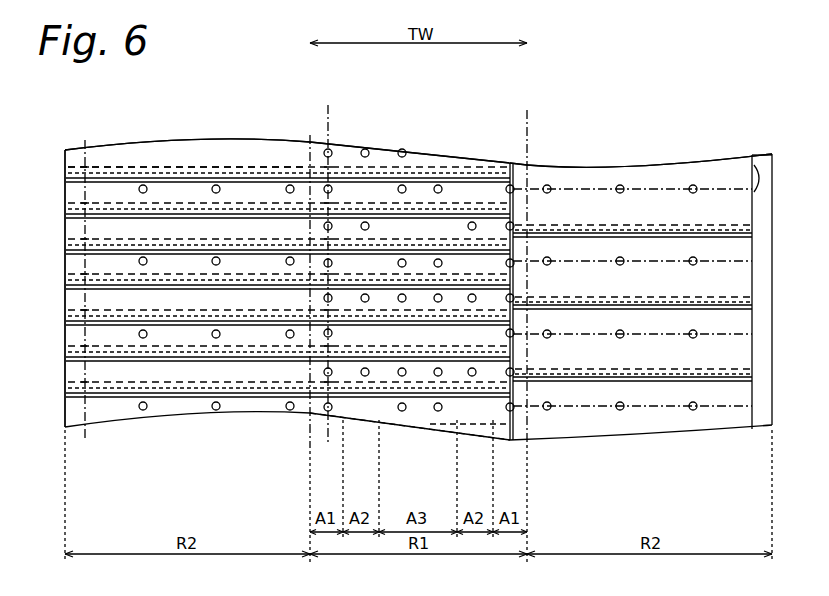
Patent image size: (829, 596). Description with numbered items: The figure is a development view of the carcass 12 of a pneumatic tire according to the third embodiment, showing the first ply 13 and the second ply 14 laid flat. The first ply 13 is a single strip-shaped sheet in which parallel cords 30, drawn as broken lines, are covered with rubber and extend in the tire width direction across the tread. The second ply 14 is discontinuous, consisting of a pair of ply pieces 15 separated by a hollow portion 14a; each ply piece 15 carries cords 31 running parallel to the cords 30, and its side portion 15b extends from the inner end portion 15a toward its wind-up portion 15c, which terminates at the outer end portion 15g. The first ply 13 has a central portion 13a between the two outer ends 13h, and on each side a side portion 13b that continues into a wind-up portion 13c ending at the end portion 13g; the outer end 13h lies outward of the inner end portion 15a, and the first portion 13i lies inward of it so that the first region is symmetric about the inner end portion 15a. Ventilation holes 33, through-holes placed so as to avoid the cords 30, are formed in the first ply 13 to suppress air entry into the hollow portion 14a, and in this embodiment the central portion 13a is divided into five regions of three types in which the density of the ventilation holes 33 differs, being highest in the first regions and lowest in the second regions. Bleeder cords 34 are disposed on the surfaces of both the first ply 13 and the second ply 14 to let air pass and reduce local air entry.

The carcass 12 is at (686, 93).
The first ply 13 is at (126, 421).
The central portion 13a is at (407, 152).
The side portion 13b is at (241, 143).
The wind-up portion 13c is at (120, 166).
The end portion 13g is at (65, 213).
The outer end 13h is at (310, 142).
The first portion 13i is at (490, 442).
The second ply 14 is at (603, 440).
The hollow portion 14a is at (396, 420).
The ply piece 15 is at (83, 152).
The inner end portion 15a is at (341, 147).
The side portion 15b is at (608, 200).
The wind-up portion 15c is at (712, 186).
The outer end portion 15g is at (756, 175).
The cords 30 is at (189, 203).
The cords 31 is at (636, 218).
The ventilation holes 33 is at (438, 188).
The bleeder cords 34 is at (100, 252).